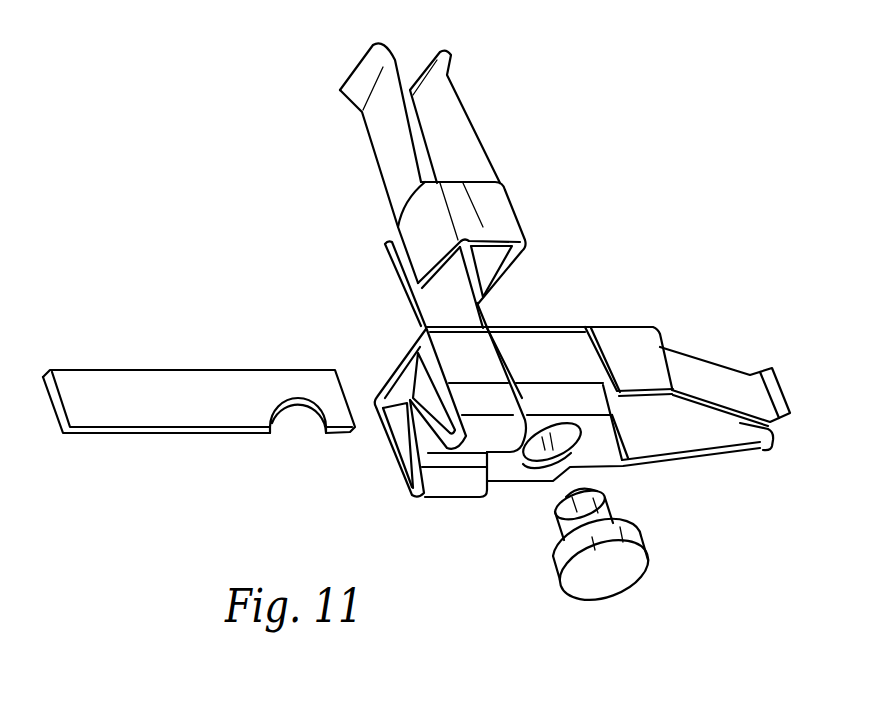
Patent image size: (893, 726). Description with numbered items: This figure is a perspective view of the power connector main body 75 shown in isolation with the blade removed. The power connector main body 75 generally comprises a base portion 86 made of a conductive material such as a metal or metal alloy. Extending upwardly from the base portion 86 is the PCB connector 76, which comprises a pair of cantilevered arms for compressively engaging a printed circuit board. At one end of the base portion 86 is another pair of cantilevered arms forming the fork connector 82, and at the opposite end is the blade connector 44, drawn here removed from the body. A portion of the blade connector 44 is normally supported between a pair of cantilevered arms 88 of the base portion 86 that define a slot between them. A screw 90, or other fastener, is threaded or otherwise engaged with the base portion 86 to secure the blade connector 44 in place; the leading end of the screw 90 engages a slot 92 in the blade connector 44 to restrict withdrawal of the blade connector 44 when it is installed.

The blade connector 44 is at (199, 395).
The power connector main body 75 is at (548, 402).
The PCB connector 76 is at (463, 128).
The fork connector 82 is at (711, 381).
The base portion 86 is at (557, 362).
The cantilevered arms 88 is at (437, 417).
The screw 90 is at (617, 569).
The slot 92 is at (304, 416).